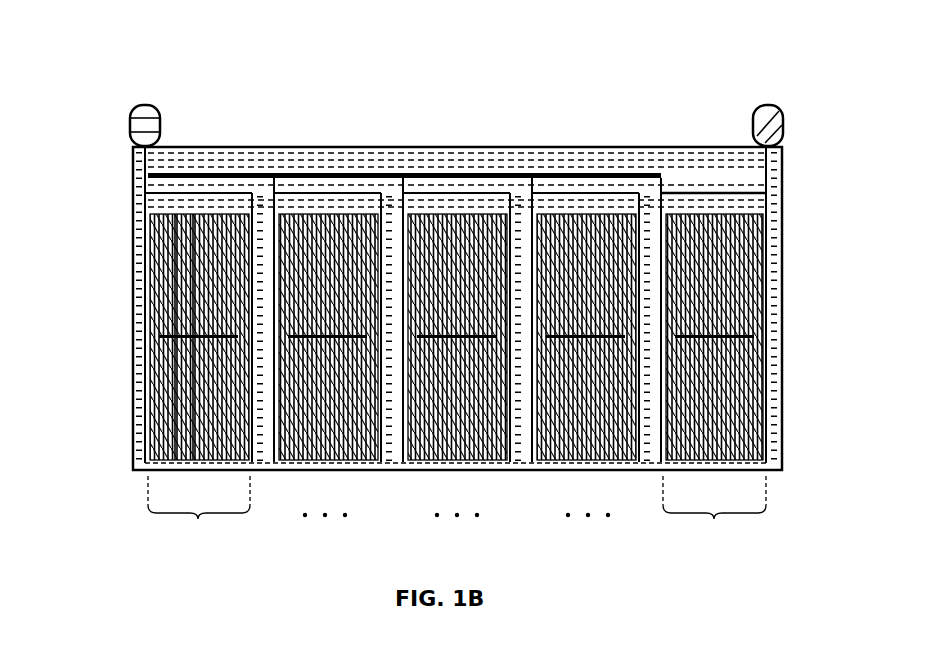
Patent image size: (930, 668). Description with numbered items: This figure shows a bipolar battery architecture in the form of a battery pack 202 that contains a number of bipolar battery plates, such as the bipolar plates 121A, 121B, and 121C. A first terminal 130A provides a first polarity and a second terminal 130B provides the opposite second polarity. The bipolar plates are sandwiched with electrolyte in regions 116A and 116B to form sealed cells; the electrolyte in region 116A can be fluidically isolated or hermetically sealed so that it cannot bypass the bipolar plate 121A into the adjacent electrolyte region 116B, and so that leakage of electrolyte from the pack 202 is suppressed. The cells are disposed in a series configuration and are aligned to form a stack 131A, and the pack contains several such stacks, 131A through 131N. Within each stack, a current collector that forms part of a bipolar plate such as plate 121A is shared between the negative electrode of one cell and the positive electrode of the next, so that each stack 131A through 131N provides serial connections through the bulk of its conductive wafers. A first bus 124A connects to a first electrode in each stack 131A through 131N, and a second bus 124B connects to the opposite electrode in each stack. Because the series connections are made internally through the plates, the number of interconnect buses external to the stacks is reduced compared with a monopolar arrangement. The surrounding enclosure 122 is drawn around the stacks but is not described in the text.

The battery pack 202 is at (147, 56).
The housing 122 is at (530, 147).
The first terminal 130A is at (142, 105).
The second terminal 130B is at (775, 106).
The first bus 124A is at (483, 173).
The second bus 124B is at (716, 192).
The electrolyte region 116A is at (176, 214).
The electrolyte region 116B is at (193, 214).
The bipolar plate 121A is at (170, 330).
The bipolar plate 121B is at (195, 405).
The bipolar plate 121C is at (152, 262).
The stack 131A is at (169, 318).
The stack 131N is at (714, 381).